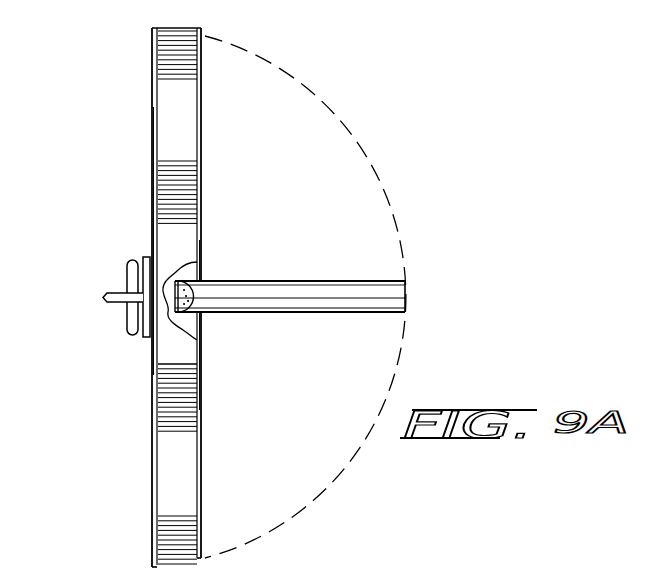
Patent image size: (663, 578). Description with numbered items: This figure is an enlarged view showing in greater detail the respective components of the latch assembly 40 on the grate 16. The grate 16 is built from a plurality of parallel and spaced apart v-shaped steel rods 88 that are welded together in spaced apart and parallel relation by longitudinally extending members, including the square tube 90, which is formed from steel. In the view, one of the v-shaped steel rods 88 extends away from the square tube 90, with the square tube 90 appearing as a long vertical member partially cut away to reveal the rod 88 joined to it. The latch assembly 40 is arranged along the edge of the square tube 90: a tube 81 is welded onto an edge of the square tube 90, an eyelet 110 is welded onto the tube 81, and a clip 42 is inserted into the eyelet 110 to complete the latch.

The grate 16 is at (302, 283).
The v-shaped steel rod 88 is at (231, 281).
The square tube 90 is at (152, 78).
The tube 81 is at (146, 257).
The clip 42 is at (124, 271).
The eyelet 110 is at (102, 297).
The latch assembly 40 is at (132, 376).